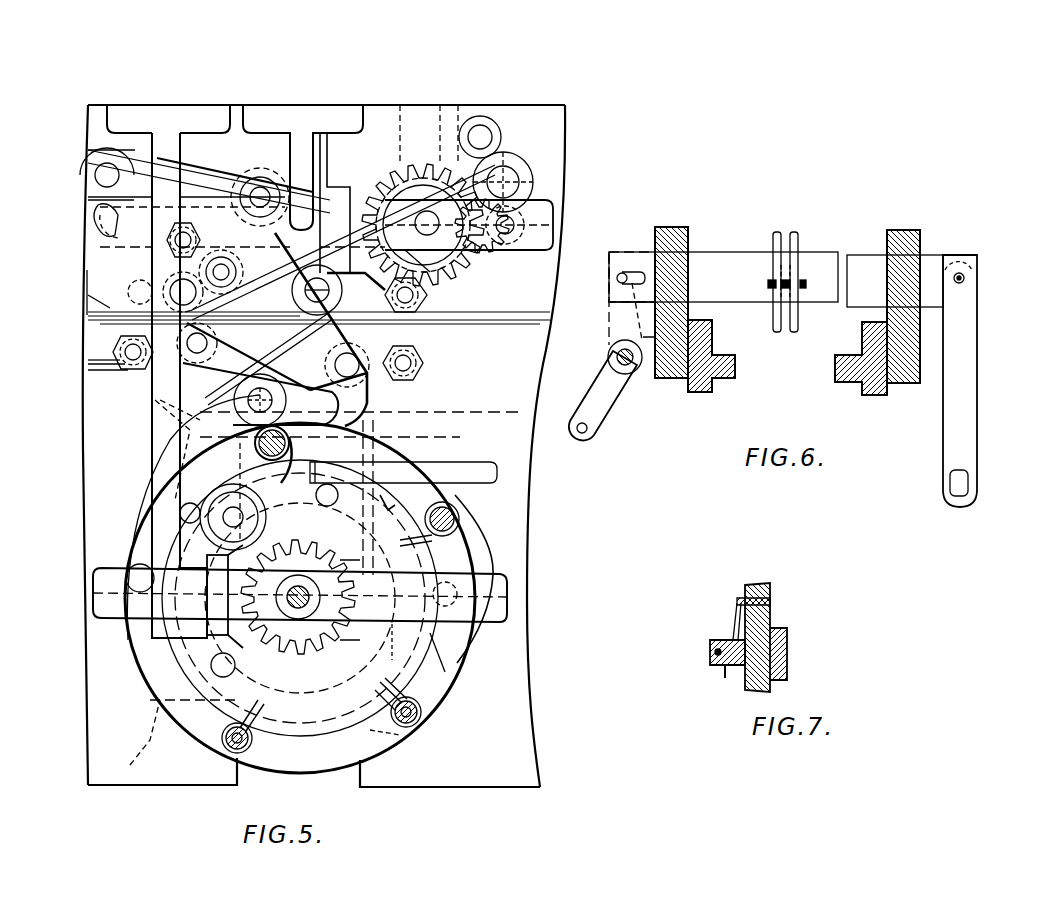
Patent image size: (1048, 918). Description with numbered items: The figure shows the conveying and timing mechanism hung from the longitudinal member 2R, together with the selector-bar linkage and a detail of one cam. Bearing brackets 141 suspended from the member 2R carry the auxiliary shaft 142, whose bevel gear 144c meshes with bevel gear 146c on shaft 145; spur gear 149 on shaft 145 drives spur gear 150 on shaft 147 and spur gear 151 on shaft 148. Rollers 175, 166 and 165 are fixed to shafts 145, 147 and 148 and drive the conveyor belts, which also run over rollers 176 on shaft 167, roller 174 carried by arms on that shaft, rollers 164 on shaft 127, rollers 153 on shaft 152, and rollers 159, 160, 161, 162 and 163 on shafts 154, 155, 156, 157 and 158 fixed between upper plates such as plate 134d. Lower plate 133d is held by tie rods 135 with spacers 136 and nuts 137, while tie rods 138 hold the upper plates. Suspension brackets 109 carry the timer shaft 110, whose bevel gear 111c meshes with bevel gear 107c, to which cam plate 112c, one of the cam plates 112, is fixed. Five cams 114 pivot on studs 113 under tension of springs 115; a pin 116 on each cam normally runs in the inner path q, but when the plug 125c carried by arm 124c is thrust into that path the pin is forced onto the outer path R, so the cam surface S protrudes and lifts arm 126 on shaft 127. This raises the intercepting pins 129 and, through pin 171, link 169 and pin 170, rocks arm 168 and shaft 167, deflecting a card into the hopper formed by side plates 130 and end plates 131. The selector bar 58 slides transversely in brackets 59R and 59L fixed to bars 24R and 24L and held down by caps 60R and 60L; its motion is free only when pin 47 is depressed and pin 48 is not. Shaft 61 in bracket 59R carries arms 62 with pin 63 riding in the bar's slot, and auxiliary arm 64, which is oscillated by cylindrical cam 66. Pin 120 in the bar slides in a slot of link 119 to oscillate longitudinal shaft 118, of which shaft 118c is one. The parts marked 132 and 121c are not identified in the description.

In FIG. 5, the hanger bracket 132 is at (113, 128).
In FIG. 5, the bearing bracket 141 is at (257, 127).
In FIG. 5, the cam 114 is at (140, 515).
In FIG. 7, the cam 114 is at (785, 660).
In FIG. 5, the bevel gear 144c is at (366, 192).
In FIG. 5, the roller 159 is at (410, 160).
In FIG. 5, the pin 170 is at (248, 190).
In FIG. 5, the roller 174 is at (250, 198).
In FIG. 5, the link 169 is at (285, 315).
In FIG. 5, the shaft 167 is at (90, 178).
In FIG. 5, the roller 162 is at (95, 216).
In FIG. 5, the auxiliary shaft 142 is at (112, 232).
In FIG. 5, the tie rod 138 is at (289, 267).
In FIG. 5, the spacer 136 is at (113, 352).
In FIG. 5, the shaft 158 is at (423, 358).
In FIG. 5, the arm 168 is at (262, 185).
In FIG. 5, the shaft 156 is at (221, 264).
In FIG. 5, the roller 161 is at (230, 266).
In FIG. 5, the shaft 155 is at (160, 286).
In FIG. 5, the roller 160 is at (168, 296).
In FIG. 5, the bevel gear 146c is at (388, 185).
In FIG. 5, the shaft 154 is at (395, 172).
In FIG. 5, the shaft 157 is at (548, 230).
In FIG. 5, the spur gear 149 is at (492, 268).
In FIG. 5, the shaft 145 is at (455, 275).
In FIG. 5, the roller 175 is at (442, 278).
In FIG. 5, the roller 176 is at (508, 178).
In FIG. 5, the roller 153 is at (480, 128).
In FIG. 5, the shaft 152 is at (493, 135).
In FIG. 5, the intercepting pin 129 is at (341, 329).
In FIG. 5, the roller 166 is at (321, 290).
In FIG. 5, the shaft 147 is at (338, 294).
In FIG. 5, the spur gear 150 is at (418, 342).
In FIG. 5, the roller 163 is at (356, 370).
In FIG. 5, the shaft 127 is at (188, 368).
In FIG. 5, the roller 164 is at (192, 350).
In FIG. 5, the plate 133d is at (118, 358).
In FIG. 5, the nut 137 is at (120, 363).
In FIG. 5, the tie rod 135 is at (125, 370).
In FIG. 5, the upper plate 134d is at (88, 300).
In FIG. 5, the pin 171 is at (372, 416).
In FIG. 5, the roller 165 is at (182, 395).
In FIG. 5, the shaft 148 is at (180, 410).
In FIG. 5, the spur gear 151 is at (183, 440).
In FIG. 5, the arm 126 is at (372, 436).
In FIG. 5, the longitudinal shaft 118c is at (478, 468).
In FIG. 5, the side plate 130 is at (242, 775).
In FIG. 5, the end plate 131 is at (160, 780).
In FIG. 5, the suspension bracket 109 is at (150, 500).
In FIG. 5, the bevel gear 107c is at (298, 603).
In FIG. 5, the bevel gear 111c is at (248, 605).
In FIG. 5, the arm 124c is at (333, 570).
In FIG. 5, the plug 125c is at (238, 490).
In FIG. 5, the pendant 121c is at (368, 488).
In FIG. 5, the outer cam path R is at (408, 498).
In FIG. 5, the spring 115 is at (452, 522).
In FIG. 7, the spring 115 is at (735, 622).
In FIG. 5, the stud 113 is at (333, 712).
In FIG. 7, the stud 113 is at (715, 665).
In FIG. 5, the cam plate 112c is at (404, 710).
In FIG. 5, the longitudinal member 2R is at (512, 517).
In FIG. 5, the cam surface S is at (478, 558).
In FIG. 5, the pin 116 is at (446, 582).
In FIG. 5, the timer shaft 110 is at (470, 652).
In FIG. 5, the inner cam path q is at (406, 642).
In FIG. 6, the selector bar 58 is at (723, 255).
In FIG. 6, the arm 62 is at (609, 323).
In FIG. 6, the bracket cap 60R is at (663, 230).
In FIG. 6, the bracket 59R is at (667, 378).
In FIG. 6, the bar 24R is at (705, 370).
In FIG. 6, the pin 47 is at (773, 238).
In FIG. 6, the pin 48 is at (795, 238).
In FIG. 6, the bracket cap 60L is at (910, 232).
In FIG. 6, the bracket 59L is at (893, 370).
In FIG. 6, the bar 24L is at (843, 383).
In FIG. 6, the link 119 is at (948, 416).
In FIG. 6, the pin 120 is at (966, 278).
In FIG. 6, the longitudinal shaft 118 is at (945, 482).
In FIG. 6, the shaft 61 is at (618, 360).
In FIG. 6, the auxiliary arm 64 is at (606, 395).
In FIG. 6, the cylindrical cam 66 is at (584, 433).
In FIG. 6, the pin 63 is at (622, 272).
In FIG. 7, the cam plate 112 is at (772, 618).